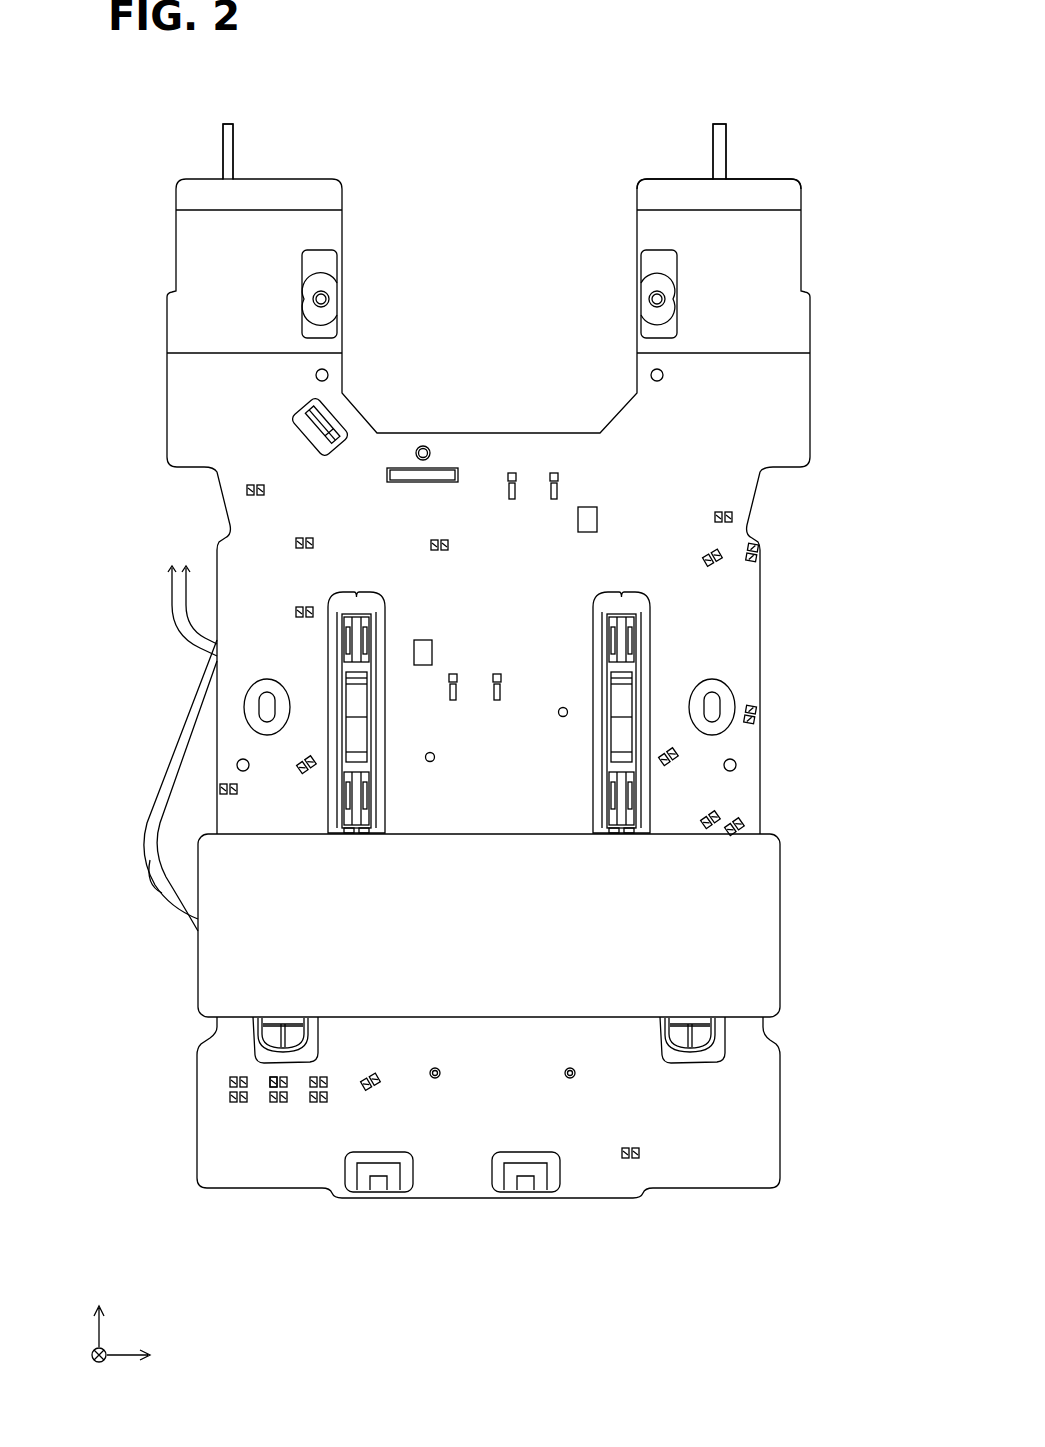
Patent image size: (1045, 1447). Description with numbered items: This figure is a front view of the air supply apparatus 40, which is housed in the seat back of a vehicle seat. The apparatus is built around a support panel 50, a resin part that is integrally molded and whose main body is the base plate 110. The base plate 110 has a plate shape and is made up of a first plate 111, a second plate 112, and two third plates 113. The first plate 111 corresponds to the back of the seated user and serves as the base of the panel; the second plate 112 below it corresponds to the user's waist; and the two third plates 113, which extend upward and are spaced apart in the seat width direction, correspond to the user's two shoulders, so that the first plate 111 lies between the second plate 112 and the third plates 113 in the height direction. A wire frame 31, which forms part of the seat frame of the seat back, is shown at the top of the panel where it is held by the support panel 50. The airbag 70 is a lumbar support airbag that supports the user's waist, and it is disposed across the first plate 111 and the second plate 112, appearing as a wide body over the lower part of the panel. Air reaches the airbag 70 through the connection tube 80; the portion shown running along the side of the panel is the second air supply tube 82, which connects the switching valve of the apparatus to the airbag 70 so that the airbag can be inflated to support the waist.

The air supply apparatus 40 is at (485, 727).
The wire frame 31 is at (236, 152).
The support panel 50 is at (806, 195).
The base plate 110 is at (485, 685).
The third plate 113 is at (176, 274).
The first plate 111 is at (760, 598).
The second plate 112 is at (702, 1192).
The airbag 70 is at (777, 836).
The connection tube 80 is at (168, 741).
The second air supply tube 82 is at (162, 894).